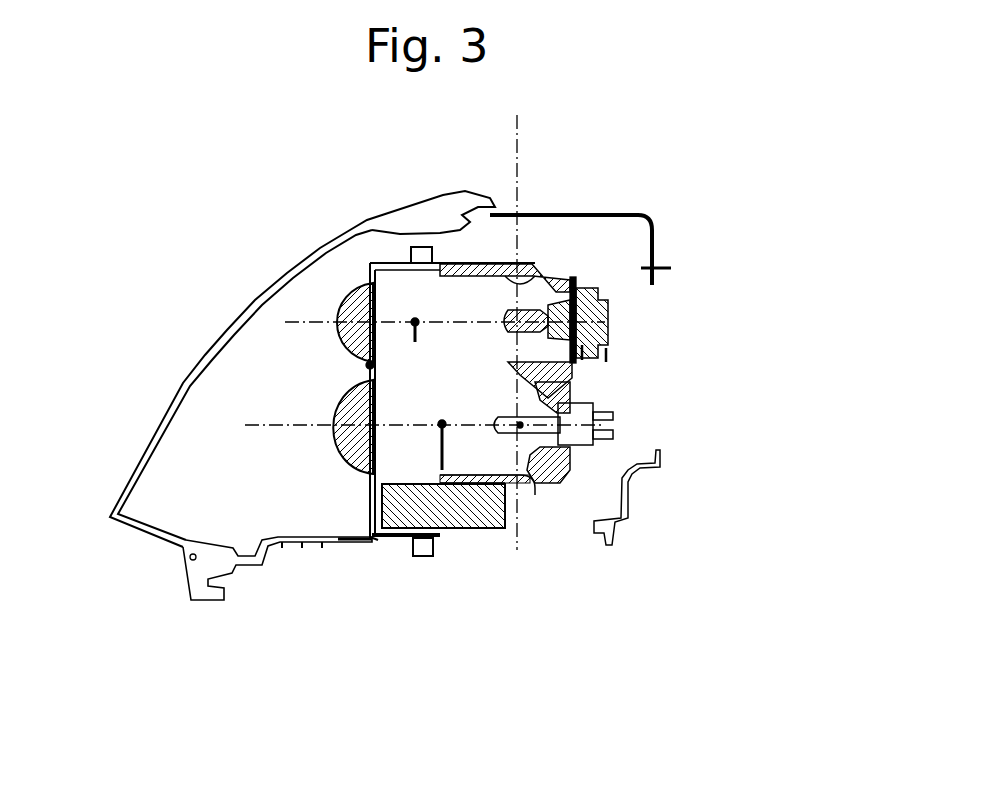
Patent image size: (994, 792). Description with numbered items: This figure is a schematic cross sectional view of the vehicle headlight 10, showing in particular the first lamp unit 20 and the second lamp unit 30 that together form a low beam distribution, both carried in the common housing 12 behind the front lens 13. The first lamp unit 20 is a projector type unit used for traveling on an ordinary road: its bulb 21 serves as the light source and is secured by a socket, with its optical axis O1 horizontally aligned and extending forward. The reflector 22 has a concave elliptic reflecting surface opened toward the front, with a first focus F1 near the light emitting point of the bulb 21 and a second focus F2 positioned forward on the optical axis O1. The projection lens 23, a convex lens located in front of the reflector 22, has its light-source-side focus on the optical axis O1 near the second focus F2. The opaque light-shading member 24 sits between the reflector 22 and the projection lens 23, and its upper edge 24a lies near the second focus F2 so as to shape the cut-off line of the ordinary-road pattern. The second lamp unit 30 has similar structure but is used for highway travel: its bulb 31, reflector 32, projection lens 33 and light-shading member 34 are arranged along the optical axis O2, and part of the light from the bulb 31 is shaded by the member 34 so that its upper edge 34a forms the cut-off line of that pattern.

The vehicle headlight 10 is at (773, 176).
The common housing 12 is at (618, 216).
The front lens 13 is at (323, 247).
The first lamp unit 20 is at (539, 492).
The bulb 21 is at (590, 386).
The reflector 22 is at (562, 458).
The projection lens 23 is at (338, 436).
The light-shading member 24 is at (445, 458).
The upper edge 24a is at (376, 540).
The second lamp unit 30 is at (540, 256).
The bulb 31 is at (540, 306).
The reflector 32 is at (506, 262).
The projection lens 33 is at (340, 337).
The light-shading member 34 is at (423, 380).
The upper edge 34a is at (412, 321).
The first focus F1 is at (518, 428).
The second focus F2 is at (441, 428).
The optical axis O1 is at (340, 425).
The optical axis O2 is at (300, 323).